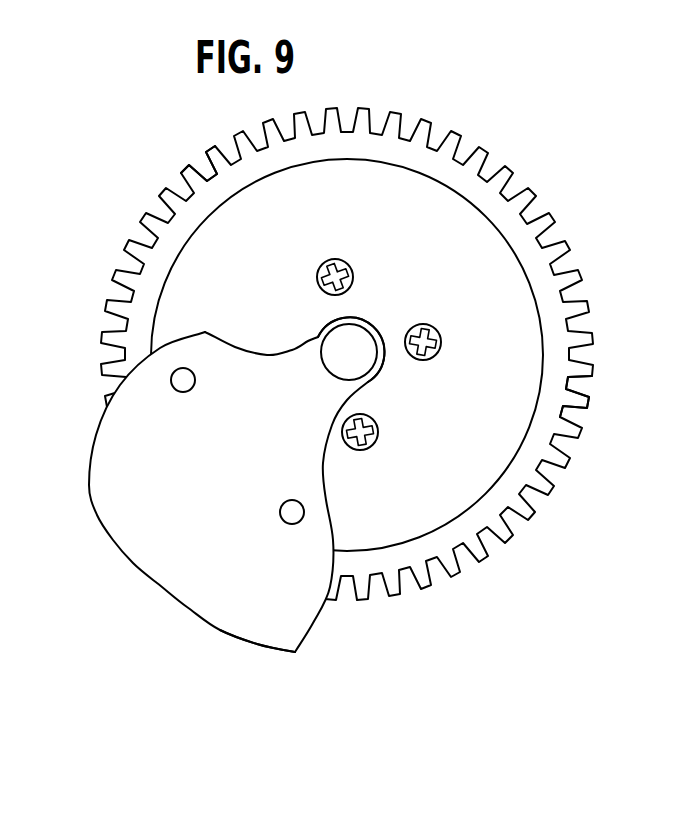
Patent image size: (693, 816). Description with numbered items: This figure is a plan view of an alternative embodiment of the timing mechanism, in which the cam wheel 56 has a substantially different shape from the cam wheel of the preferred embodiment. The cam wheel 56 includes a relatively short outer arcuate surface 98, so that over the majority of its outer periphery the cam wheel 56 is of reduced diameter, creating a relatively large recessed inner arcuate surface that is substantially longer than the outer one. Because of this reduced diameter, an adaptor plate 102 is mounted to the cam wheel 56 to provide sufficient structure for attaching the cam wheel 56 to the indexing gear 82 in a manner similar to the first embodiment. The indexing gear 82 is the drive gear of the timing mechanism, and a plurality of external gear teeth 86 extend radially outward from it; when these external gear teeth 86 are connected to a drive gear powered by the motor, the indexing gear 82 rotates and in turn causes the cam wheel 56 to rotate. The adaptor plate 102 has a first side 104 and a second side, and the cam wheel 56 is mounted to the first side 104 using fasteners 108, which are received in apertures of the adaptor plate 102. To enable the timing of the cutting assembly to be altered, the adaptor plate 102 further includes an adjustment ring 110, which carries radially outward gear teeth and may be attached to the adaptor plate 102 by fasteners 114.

The cam wheel 56 is at (180, 567).
The indexing gear 82 is at (453, 168).
The external gear teeth 86 is at (183, 173).
The outer arcuate surface 98 is at (257, 645).
The adaptor plate 102 is at (487, 240).
The first side 104 is at (527, 409).
The fasteners 108 is at (171, 386).
The adjustment ring 110 is at (363, 318).
The fasteners 114 is at (325, 263).